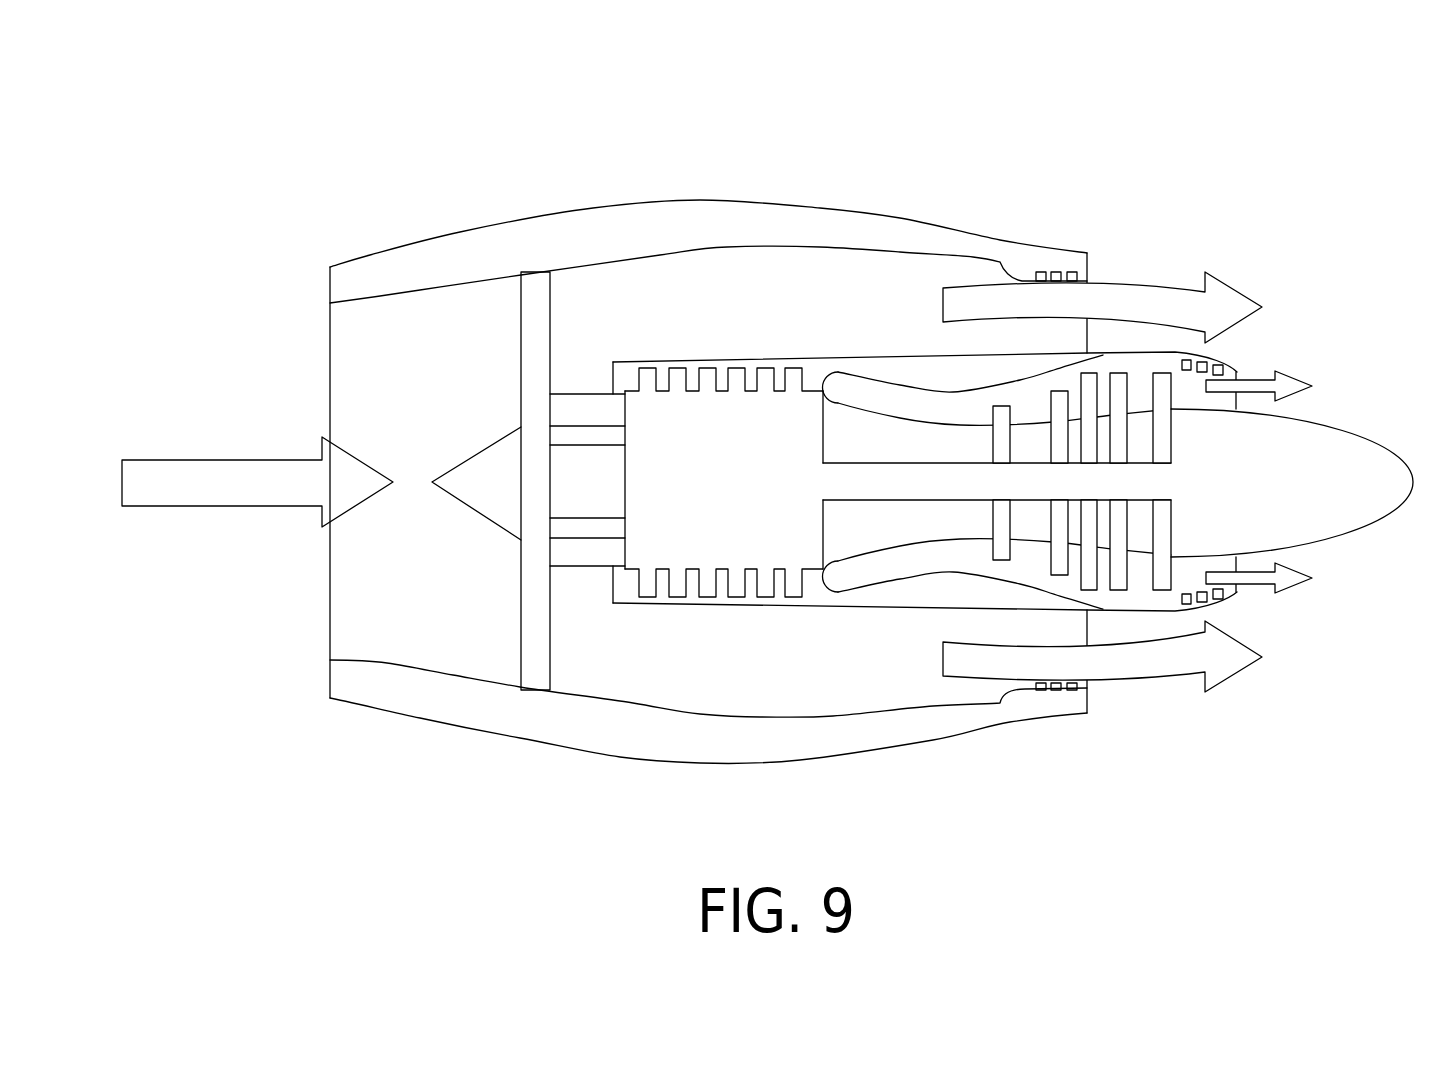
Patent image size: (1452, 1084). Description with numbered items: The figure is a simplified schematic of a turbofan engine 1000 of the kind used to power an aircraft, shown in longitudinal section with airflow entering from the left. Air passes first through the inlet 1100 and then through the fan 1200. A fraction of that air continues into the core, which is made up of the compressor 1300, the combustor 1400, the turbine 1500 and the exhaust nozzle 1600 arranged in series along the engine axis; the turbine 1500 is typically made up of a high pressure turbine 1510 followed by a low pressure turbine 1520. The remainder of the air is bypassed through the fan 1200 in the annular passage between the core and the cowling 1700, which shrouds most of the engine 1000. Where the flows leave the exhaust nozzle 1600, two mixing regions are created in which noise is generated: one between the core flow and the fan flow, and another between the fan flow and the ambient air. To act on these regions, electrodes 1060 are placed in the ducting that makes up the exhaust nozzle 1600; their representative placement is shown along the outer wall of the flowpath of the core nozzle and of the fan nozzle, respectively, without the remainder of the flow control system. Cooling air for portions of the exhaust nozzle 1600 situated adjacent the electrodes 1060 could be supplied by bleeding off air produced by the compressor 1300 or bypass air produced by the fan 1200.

The engine 1000 is at (585, 118).
The inlet 1100 is at (430, 564).
The fan 1200 is at (504, 390).
The compressor 1300 is at (694, 622).
The combustor 1400 is at (889, 600).
The turbine 1500 is at (1051, 634).
The high pressure turbine 1510 is at (1012, 575).
The low pressure turbine 1520 is at (1142, 588).
The exhaust nozzle 1600 is at (1268, 280).
The cowling 1700 is at (720, 238).
The electrodes 1060 is at (1016, 274).